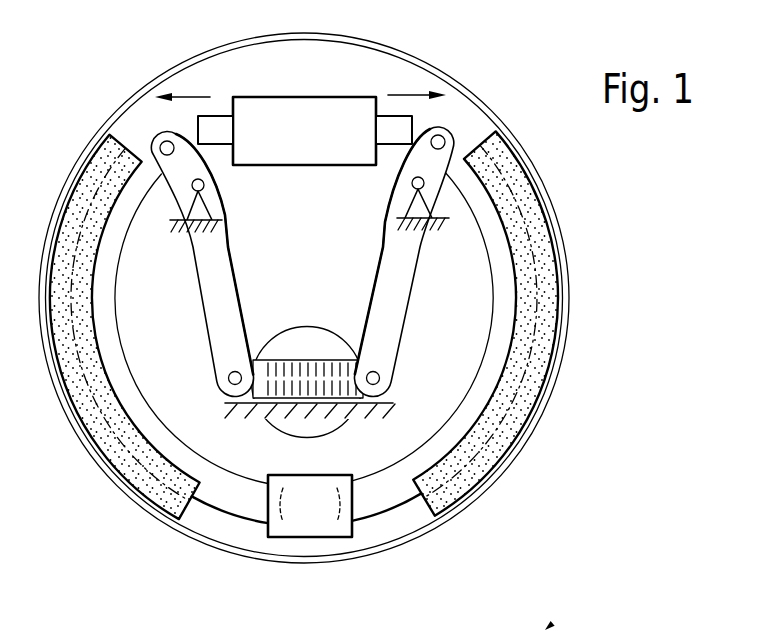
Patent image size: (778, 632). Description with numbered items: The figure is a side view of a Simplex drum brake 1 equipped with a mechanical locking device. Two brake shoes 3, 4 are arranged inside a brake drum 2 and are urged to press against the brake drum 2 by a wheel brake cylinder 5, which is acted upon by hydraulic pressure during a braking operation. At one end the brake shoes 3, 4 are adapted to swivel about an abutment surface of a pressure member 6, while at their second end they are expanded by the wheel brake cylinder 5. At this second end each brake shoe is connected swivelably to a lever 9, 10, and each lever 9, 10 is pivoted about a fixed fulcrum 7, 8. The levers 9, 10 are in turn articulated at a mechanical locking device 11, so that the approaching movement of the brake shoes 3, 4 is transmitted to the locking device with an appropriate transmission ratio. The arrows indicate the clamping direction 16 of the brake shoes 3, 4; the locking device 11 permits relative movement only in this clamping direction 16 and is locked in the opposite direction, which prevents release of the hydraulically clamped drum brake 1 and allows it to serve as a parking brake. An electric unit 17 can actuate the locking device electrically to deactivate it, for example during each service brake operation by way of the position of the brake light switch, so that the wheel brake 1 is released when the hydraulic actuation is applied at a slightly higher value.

The Simplex drum brake 1 is at (118, 88).
The brake drum 2 is at (188, 60).
The brake shoe 3 is at (112, 232).
The brake shoe 4 is at (497, 337).
The wheel brake cylinder 5 is at (353, 104).
The pressure member 6 is at (316, 522).
The fixed fulcrum 7 is at (204, 184).
The fixed fulcrum 8 is at (412, 184).
The lever 9 is at (217, 280).
The lever 10 is at (392, 288).
The mechanical locking device 11 is at (245, 432).
The clamping direction 16 is at (200, 97).
The electric unit 17 is at (549, 626).